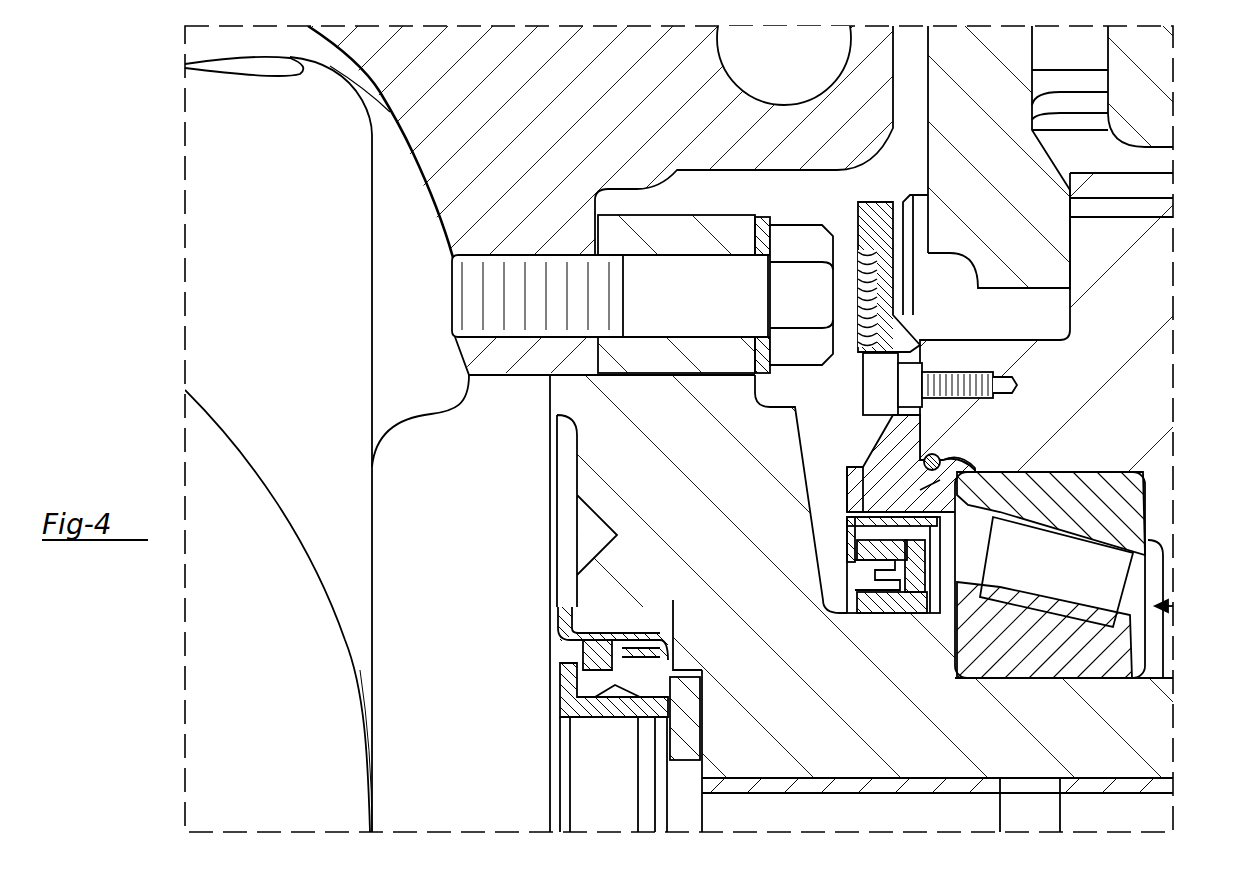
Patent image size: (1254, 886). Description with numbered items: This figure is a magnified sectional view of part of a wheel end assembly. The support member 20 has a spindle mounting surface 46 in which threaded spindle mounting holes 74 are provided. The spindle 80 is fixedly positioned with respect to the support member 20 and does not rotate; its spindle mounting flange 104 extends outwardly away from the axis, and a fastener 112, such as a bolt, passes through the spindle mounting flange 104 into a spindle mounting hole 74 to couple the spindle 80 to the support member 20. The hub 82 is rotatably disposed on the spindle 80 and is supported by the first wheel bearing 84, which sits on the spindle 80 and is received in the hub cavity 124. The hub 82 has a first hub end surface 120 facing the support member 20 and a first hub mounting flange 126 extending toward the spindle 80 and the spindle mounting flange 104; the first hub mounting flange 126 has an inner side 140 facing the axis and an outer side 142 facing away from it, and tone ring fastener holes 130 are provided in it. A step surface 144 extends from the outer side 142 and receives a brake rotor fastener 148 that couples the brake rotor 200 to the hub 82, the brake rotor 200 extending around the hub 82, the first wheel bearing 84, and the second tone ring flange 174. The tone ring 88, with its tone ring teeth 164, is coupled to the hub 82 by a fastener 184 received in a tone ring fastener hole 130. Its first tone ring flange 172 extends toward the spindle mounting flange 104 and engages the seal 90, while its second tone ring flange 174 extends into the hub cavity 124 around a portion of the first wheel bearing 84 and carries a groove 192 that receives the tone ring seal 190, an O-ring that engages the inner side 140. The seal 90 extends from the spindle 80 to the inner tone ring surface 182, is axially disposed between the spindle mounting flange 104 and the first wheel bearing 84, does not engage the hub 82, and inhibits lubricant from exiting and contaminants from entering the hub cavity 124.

The support member 20 is at (470, 203).
The spindle mounting surface 46 is at (598, 238).
The spindle mounting holes 74 is at (548, 266).
The spindle 80 is at (1150, 735).
The hub 82 is at (1135, 298).
The first wheel bearing 84 is at (1148, 487).
The tone ring 88 is at (870, 202).
The seal 90 is at (848, 562).
The spindle mounting flange 104 is at (730, 215).
The fastener 112 is at (710, 304).
The first hub end surface 120 is at (860, 436).
The hub cavity 124 is at (1195, 606).
The first hub mounting flange 126 is at (912, 350).
The tone ring fastener holes 130 is at (1005, 383).
The inner side 140 is at (975, 468).
The outer side 142 is at (1000, 340).
The step surface 144 is at (1068, 262).
The brake rotor fastener 148 is at (952, 301).
The tone ring teeth 164 is at (848, 225).
The first tone ring flange 172 is at (850, 478).
The second tone ring flange 174 is at (1086, 478).
The inner tone ring surface 182 is at (847, 525).
The fastener 184 is at (895, 395).
The tone ring seal 190 is at (937, 456).
The groove 192 is at (935, 482).
The brake rotor 200 is at (1020, 176).